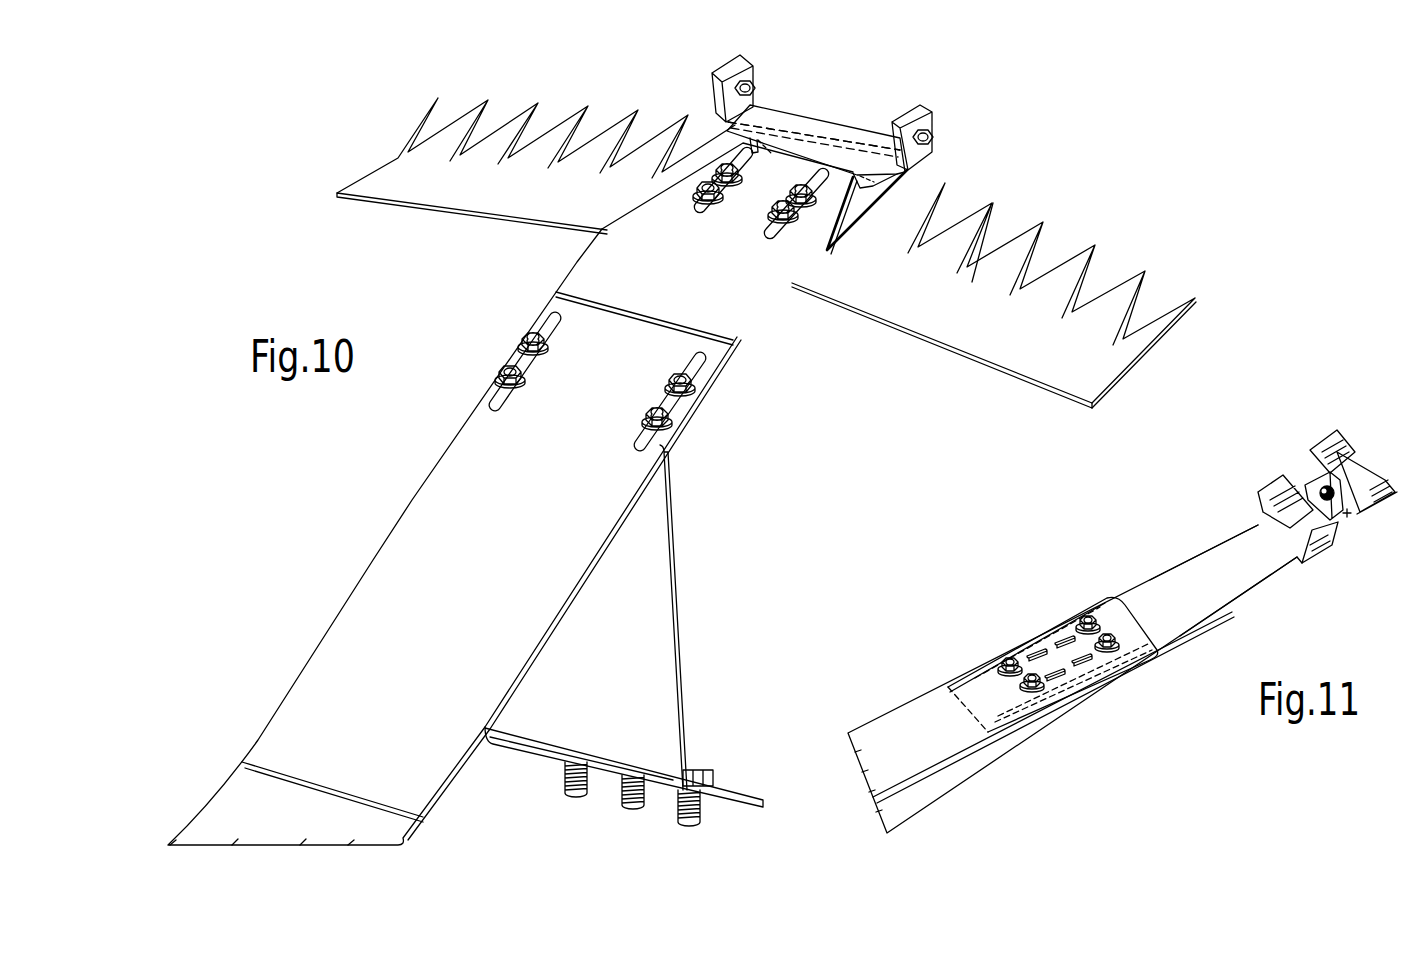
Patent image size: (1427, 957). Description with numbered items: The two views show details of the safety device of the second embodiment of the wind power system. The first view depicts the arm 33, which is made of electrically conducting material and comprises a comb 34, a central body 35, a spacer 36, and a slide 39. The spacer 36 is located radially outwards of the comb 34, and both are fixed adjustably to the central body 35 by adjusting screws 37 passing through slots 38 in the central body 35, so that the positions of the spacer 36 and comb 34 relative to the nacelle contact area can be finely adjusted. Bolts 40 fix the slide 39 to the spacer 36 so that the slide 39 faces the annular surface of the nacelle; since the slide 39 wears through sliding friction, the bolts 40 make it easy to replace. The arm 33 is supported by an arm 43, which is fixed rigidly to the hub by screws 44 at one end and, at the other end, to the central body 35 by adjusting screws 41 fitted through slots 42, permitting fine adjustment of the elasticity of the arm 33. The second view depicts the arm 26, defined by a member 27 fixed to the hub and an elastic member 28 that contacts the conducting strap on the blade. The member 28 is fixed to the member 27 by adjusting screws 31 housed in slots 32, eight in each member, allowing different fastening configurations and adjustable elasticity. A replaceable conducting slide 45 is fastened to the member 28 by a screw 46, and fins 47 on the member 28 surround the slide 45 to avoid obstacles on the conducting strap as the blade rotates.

In FIG. 11, the arm 26 is at (1030, 612).
In FIG. 11, the member 27 is at (915, 735).
In FIG. 11, the member 28 is at (1225, 575).
In FIG. 11, the adjusting screws 31 is at (1087, 613).
In FIG. 11, the slots 32 is at (1100, 632).
In FIG. 10, the arm 33 is at (398, 505).
In FIG. 10, the comb 34 is at (1000, 232).
In FIG. 10, the central body 35 is at (707, 270).
In FIG. 10, the spacer 36 is at (863, 185).
In FIG. 10, the adjusting screws 37 is at (728, 162).
In FIG. 10, the slots 38 is at (690, 222).
In FIG. 10, the slide 39 is at (797, 122).
In FIG. 10, the bolts 40 is at (762, 80).
In FIG. 10, the adjusting screws 41 is at (522, 338).
In FIG. 10, the slots 42 is at (548, 315).
In FIG. 10, the arm 43 is at (620, 590).
In FIG. 10, the screws 44 is at (705, 770).
In FIG. 11, the slide 45 is at (1347, 515).
In FIG. 11, the screw 46 is at (1362, 468).
In FIG. 11, the fins 47 is at (1266, 482).